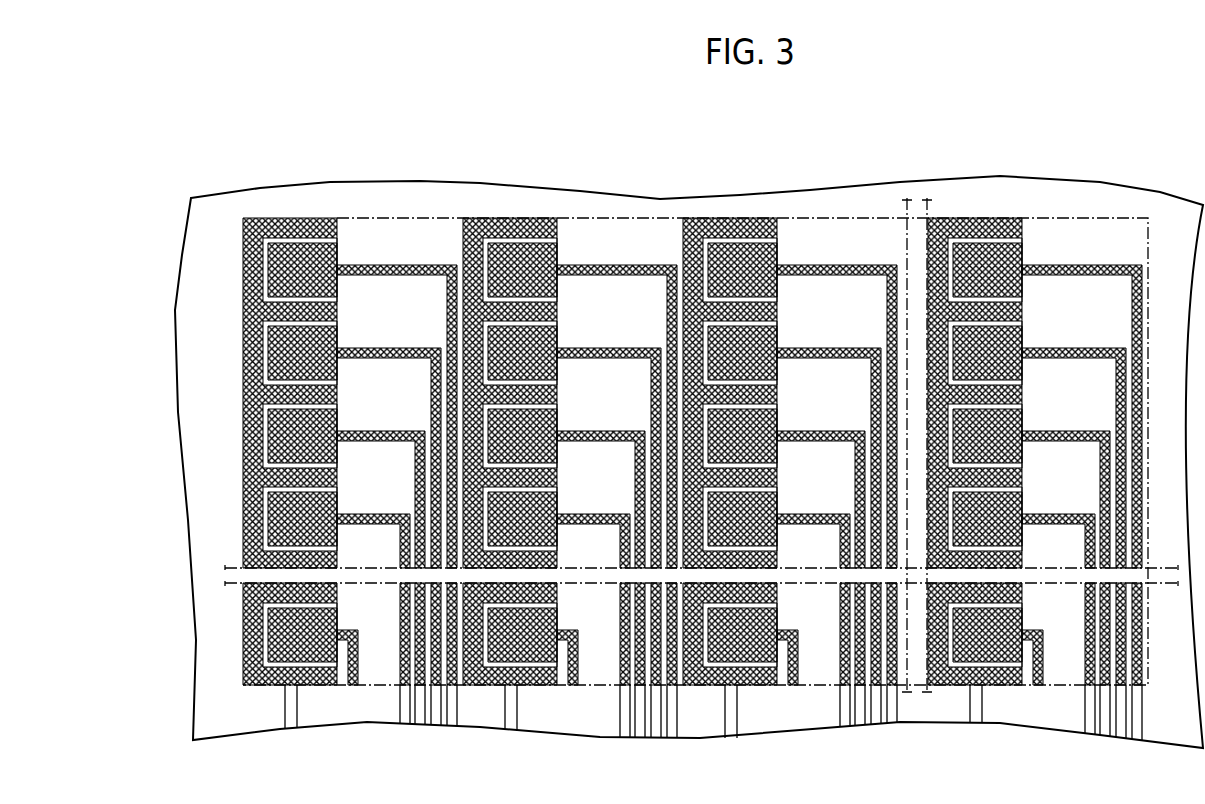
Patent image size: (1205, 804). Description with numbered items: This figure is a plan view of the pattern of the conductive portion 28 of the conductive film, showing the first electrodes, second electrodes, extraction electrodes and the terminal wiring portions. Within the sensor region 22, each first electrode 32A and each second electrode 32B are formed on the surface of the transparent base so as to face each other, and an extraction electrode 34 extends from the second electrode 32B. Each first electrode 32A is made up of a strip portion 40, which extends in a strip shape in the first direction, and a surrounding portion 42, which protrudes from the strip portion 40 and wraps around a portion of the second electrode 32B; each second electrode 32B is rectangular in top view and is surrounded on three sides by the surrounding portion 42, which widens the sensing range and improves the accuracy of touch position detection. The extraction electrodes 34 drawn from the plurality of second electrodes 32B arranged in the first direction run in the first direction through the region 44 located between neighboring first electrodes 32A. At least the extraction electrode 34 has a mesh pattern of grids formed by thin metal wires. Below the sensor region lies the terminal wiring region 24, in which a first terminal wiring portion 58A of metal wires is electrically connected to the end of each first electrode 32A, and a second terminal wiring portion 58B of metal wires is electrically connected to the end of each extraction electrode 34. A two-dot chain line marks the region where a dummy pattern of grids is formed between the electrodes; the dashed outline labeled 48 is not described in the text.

The sensor region 22 is at (243, 314).
The terminal wiring region 24 is at (272, 703).
The conductive portion 28 is at (715, 218).
The first electrode 32A is at (253, 226).
The second electrode 32B is at (290, 258).
The extraction electrode 34 is at (363, 272).
The strip portion 40 is at (258, 350).
The surrounding portion 42 is at (278, 306).
The region 44 is at (465, 169).
The detection region 48 is at (399, 238).
The first terminal wiring portion 58A is at (293, 712).
The second terminal wiring portion 58B is at (405, 712).